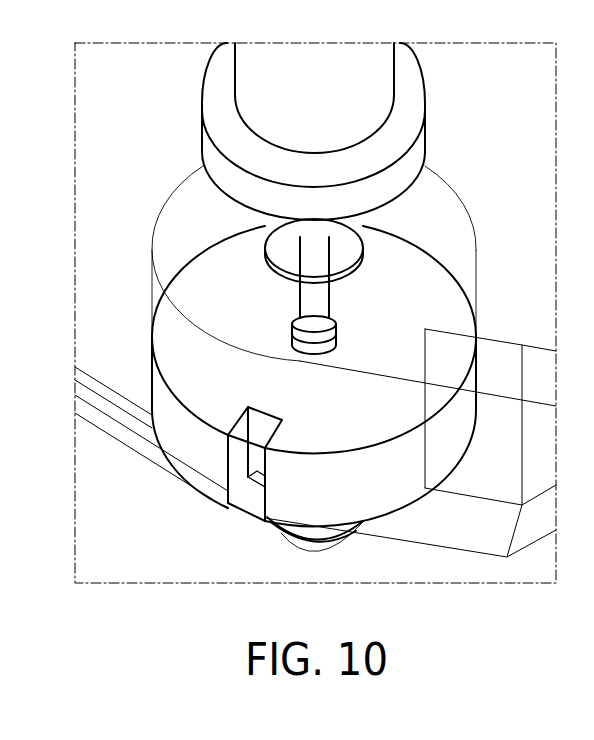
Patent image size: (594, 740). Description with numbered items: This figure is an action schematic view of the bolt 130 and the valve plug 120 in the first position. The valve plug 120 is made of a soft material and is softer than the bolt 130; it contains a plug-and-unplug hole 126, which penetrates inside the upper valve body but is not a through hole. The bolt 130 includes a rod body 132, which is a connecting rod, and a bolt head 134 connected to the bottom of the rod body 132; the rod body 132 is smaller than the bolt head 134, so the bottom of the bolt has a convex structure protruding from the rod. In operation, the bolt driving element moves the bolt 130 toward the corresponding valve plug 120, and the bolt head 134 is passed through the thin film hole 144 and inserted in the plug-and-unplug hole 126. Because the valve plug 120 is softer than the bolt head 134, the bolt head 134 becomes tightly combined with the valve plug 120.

The valve plug 120 is at (400, 324).
The plug-and-unplug hole 126 is at (290, 352).
The bolt 130 is at (271, 221).
The rod body 132 is at (306, 292).
The bolt head 134 is at (292, 325).
The thin film hole 144 is at (348, 262).